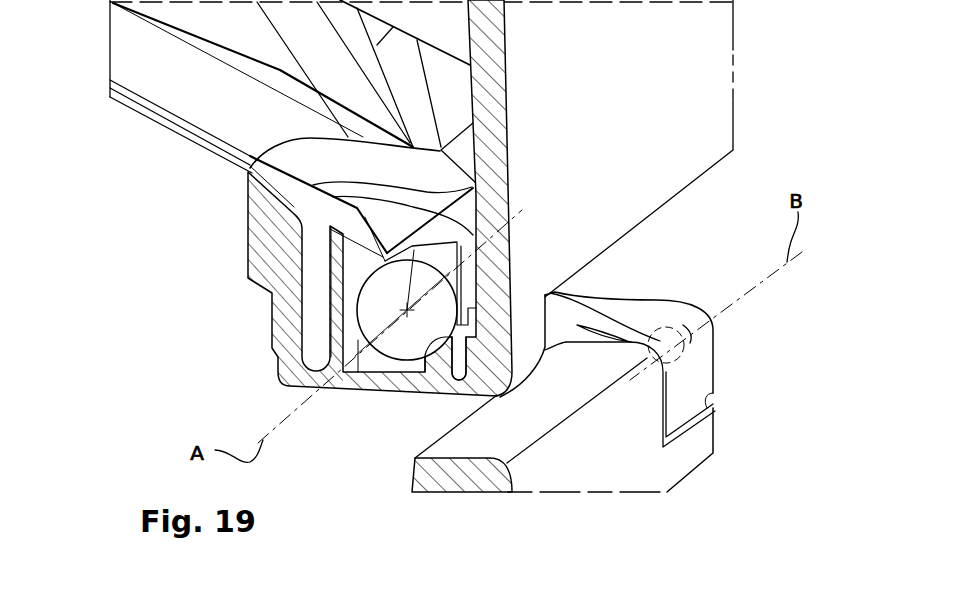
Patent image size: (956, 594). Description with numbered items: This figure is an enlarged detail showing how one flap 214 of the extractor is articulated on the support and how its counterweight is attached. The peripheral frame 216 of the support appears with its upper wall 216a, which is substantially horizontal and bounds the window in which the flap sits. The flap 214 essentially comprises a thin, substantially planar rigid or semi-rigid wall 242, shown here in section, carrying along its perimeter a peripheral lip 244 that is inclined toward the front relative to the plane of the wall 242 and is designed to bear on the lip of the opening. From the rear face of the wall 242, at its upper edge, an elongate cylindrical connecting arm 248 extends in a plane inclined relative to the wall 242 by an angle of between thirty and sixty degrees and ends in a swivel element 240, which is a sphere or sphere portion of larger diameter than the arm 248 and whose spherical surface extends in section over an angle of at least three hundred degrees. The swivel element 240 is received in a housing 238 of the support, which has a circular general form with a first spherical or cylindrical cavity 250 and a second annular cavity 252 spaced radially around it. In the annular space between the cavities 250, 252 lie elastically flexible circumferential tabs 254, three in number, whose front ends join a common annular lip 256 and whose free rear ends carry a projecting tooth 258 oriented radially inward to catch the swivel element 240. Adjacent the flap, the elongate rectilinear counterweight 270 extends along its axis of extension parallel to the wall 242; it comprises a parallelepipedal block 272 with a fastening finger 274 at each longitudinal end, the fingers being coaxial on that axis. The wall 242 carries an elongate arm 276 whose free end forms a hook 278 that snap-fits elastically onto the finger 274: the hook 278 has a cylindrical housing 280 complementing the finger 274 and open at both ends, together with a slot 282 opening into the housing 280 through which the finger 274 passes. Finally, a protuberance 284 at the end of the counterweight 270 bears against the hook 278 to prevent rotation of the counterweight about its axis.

The flap 214 is at (143, 123).
The peripheral frame 216 is at (677, 113).
The upper wall 216a is at (678, 37).
The housing 238 is at (393, 393).
The swivel element 240 is at (352, 346).
The wall 242 is at (182, 88).
The peripheral lip 244 is at (293, 190).
The connecting arm 248 is at (350, 289).
The first cavity 250 is at (362, 392).
The second cavity 252 is at (463, 372).
The circumferential tabs 254 is at (398, 334).
The annular lip 256 is at (427, 380).
The projecting tooth 258 is at (342, 314).
The counterweight 270 is at (617, 401).
The block 272 is at (565, 460).
The fastening finger 274 is at (682, 361).
The arm 276 is at (613, 317).
The hook 278 is at (687, 317).
The cylindrical housing 280 is at (690, 342).
The slot 282 is at (705, 382).
The protuberance 284 is at (705, 432).